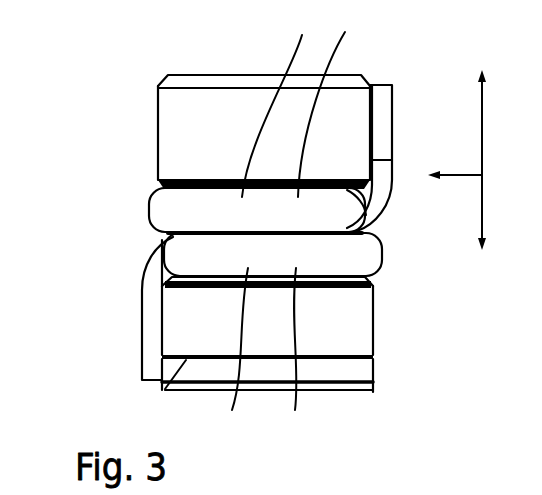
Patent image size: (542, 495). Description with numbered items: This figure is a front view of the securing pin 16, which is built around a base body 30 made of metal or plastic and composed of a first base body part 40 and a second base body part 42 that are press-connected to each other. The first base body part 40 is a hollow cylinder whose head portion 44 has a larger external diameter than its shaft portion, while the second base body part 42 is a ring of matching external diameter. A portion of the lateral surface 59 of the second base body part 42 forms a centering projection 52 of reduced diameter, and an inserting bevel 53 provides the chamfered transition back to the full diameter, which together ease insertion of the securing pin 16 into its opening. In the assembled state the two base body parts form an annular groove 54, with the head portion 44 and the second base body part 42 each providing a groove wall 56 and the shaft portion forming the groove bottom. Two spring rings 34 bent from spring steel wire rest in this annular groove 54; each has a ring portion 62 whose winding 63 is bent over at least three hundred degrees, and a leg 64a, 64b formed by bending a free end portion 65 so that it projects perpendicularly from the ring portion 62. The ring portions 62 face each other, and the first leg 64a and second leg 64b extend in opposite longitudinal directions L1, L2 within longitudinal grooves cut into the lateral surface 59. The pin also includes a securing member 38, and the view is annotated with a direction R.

The securing pin 16 is at (392, 54).
The base body 30 is at (134, 133).
The first base body part 40 is at (140, 163).
The second base body part 42 is at (390, 322).
The head portion 44 is at (223, 110).
The lateral surface 59 is at (158, 96).
The ring portion 62 is at (274, 230).
The winding 63 is at (330, 229).
The first leg 64a is at (382, 102).
The second leg 64b is at (150, 323).
The free end portion 65 is at (382, 137).
The spring ring 34 is at (160, 204).
The annular groove 54 is at (152, 236).
The groove wall 56 is at (375, 202).
The centering projection 52 is at (348, 370).
The inserting bevel 53 is at (165, 389).
The first longitudinal direction L1 is at (490, 100).
The second longitudinal direction L2 is at (488, 212).
The direction of compression R is at (458, 181).
The securing member 38 is at (471, 479).